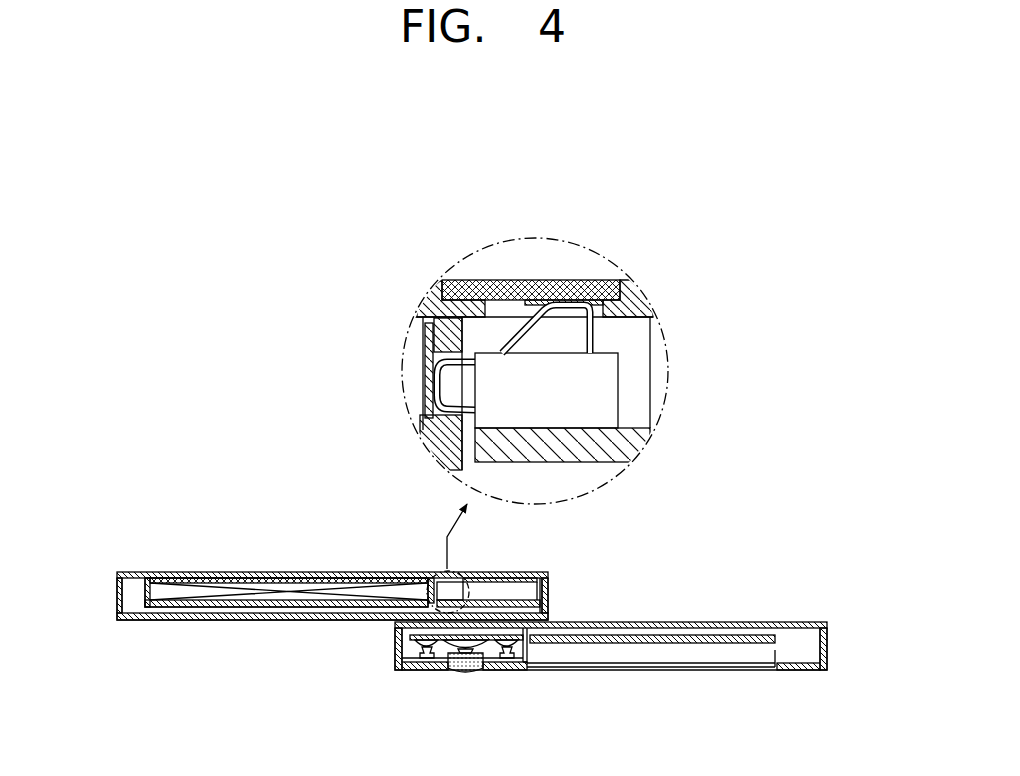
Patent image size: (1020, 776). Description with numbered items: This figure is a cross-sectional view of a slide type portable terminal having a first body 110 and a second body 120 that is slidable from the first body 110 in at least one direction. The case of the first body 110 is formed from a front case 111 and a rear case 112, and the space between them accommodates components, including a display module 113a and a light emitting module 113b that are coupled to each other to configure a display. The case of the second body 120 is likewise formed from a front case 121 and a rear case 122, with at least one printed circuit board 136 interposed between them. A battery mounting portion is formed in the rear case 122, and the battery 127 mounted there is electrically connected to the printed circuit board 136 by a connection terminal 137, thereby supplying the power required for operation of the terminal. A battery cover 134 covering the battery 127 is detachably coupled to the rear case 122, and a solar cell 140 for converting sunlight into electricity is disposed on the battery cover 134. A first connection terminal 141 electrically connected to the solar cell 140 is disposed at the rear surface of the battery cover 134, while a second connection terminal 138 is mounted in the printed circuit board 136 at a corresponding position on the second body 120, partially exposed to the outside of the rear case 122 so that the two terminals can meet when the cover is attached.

The first body 110 is at (832, 607).
The front case 111 is at (828, 663).
The rear case 112 is at (827, 635).
The display module 113a is at (640, 663).
The light emitting module 113b is at (712, 643).
The second body 120 is at (551, 560).
The front case 121 is at (120, 609).
The rear case 122 is at (120, 587).
The battery 127 is at (233, 585).
The battery cover 134 is at (288, 577).
The printed circuit board 136 is at (520, 600).
The connection terminal 137 is at (433, 357).
The second connection terminal 138 is at (592, 336).
The solar cell 140 is at (377, 572).
The first connection terminal 141 is at (565, 303).